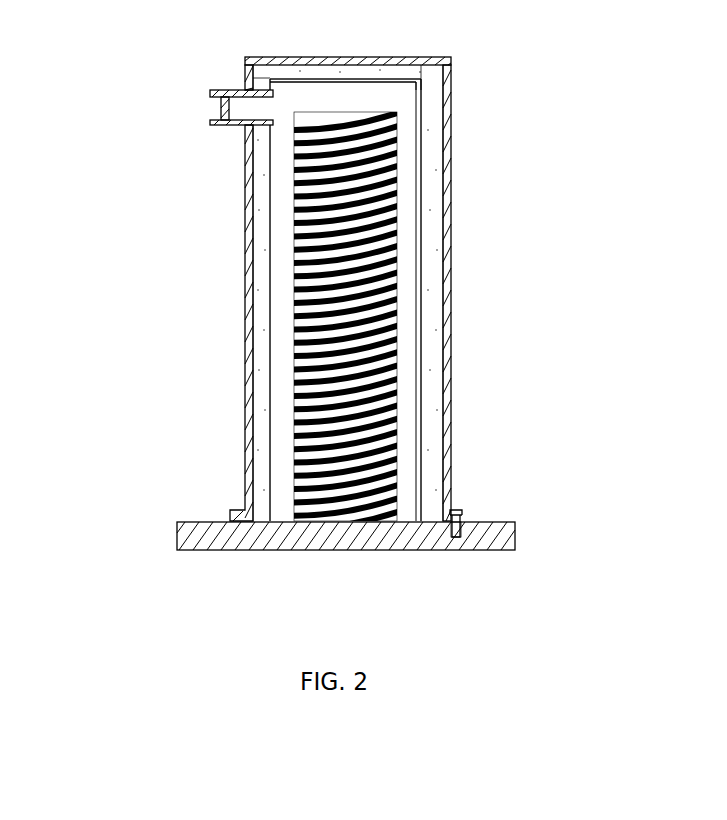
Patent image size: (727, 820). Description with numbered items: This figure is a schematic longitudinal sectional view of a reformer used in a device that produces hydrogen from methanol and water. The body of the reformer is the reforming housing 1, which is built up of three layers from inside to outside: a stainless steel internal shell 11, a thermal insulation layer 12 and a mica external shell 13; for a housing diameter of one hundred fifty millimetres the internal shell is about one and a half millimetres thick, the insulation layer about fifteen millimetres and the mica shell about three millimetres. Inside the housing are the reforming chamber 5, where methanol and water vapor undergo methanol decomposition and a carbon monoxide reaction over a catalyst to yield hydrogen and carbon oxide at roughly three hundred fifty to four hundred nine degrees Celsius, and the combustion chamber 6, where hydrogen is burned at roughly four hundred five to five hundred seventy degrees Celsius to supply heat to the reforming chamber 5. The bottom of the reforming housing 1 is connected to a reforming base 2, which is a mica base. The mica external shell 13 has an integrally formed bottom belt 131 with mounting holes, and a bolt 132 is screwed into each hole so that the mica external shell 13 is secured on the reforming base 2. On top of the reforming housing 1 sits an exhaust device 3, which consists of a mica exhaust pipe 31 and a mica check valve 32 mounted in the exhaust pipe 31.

The reforming housing 1 is at (472, 157).
The stainless steel internal shell 11 is at (420, 233).
The thermal insulation layer 12 is at (432, 297).
The mica external shell 13 is at (447, 352).
The bottom belt 131 is at (462, 513).
The bolt 132 is at (455, 530).
The reforming base 2 is at (313, 548).
The exhaust device 3 is at (168, 104).
The exhaust pipe 31 is at (233, 126).
The check valve 32 is at (213, 90).
The reforming chamber 5 is at (393, 405).
The combustion chamber 6 is at (407, 92).